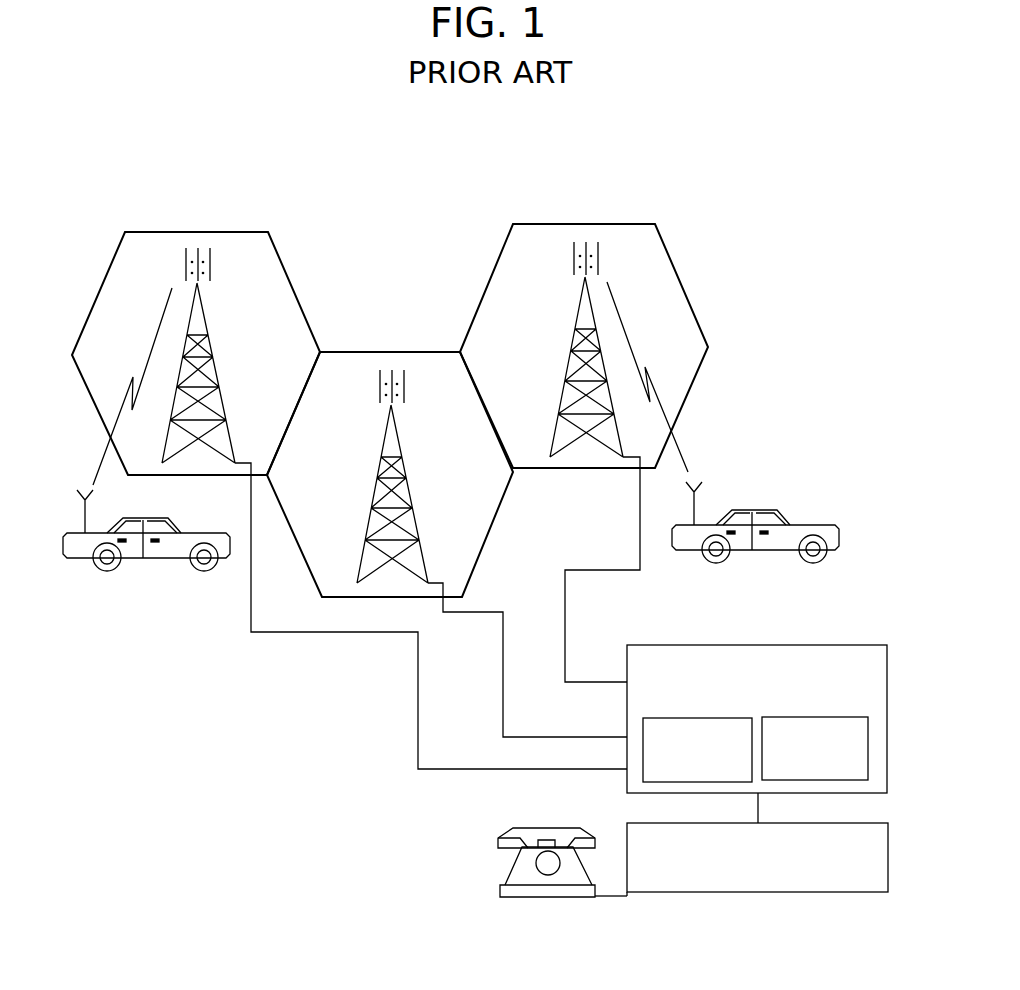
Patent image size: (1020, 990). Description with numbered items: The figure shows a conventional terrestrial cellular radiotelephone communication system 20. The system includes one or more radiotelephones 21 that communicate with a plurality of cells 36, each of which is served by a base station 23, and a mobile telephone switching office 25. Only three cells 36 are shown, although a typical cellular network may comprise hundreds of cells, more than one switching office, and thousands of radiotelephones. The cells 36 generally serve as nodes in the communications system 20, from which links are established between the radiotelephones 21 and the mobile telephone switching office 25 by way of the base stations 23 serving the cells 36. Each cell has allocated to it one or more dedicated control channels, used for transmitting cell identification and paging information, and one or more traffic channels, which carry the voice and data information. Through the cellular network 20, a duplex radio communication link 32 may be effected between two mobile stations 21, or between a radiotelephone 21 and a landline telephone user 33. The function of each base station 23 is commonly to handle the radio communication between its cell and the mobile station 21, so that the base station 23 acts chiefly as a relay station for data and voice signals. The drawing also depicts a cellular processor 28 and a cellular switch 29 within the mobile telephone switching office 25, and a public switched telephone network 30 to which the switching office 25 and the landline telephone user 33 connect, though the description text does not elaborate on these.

The terrestrial cellular radiotelephone communication system 20 is at (677, 222).
The radiotelephone 21 is at (163, 558).
The base station 23 is at (218, 333).
The mobile telephone switching office 25 is at (850, 643).
The cellular processor 28 is at (660, 718).
The cellular switch 29 is at (857, 715).
The public switched telephone network 30 is at (853, 892).
The duplex radio communication link 32 is at (157, 335).
The landline telephone user 33 is at (505, 873).
The cell 36 is at (110, 272).